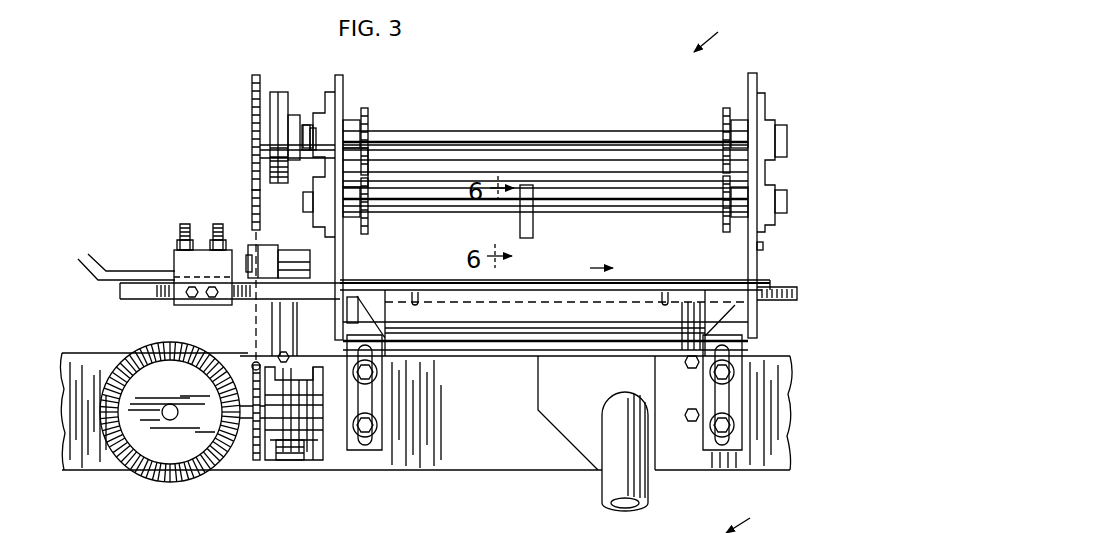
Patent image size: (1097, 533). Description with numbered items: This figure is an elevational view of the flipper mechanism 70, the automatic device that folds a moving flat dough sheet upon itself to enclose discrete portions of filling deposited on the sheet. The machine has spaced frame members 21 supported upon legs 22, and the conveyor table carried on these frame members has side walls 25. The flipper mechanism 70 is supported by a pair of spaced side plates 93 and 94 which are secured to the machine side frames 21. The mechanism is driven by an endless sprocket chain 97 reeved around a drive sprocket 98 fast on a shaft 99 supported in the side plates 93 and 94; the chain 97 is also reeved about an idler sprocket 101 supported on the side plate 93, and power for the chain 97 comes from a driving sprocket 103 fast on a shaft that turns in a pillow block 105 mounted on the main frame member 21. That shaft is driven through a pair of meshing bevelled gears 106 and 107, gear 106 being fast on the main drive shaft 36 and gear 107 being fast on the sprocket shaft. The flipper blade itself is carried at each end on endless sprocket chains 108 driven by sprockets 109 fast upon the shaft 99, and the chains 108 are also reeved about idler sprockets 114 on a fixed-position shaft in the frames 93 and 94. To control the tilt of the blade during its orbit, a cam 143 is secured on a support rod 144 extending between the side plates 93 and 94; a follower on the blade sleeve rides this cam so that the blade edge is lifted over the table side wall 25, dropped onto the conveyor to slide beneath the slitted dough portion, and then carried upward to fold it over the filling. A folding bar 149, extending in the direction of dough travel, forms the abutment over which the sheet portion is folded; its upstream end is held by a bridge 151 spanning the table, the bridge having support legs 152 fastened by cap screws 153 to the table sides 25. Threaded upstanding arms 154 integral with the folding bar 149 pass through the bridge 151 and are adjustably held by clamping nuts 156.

The flipper mechanism 70 is at (733, 273).
The frame members 21 is at (476, 472).
The legs 22 is at (624, 500).
The side walls 25 is at (124, 298).
The main drive shaft 36 is at (180, 424).
The side plate 93 is at (344, 236).
The side plate 94 is at (758, 257).
The endless sprocket chain 97 is at (255, 217).
The drive sprocket 98 is at (253, 130).
The shaft 99 is at (440, 133).
The idler sprocket 101 is at (258, 245).
The driving sprocket 103 is at (286, 466).
The pillow block 105 is at (312, 456).
The bevelled gear 106 is at (168, 479).
The bevelled gear 107 is at (258, 464).
The endless sprocket chains 108 is at (365, 168).
The sprockets 109 is at (370, 119).
The idler sprockets 114 is at (367, 212).
The cam 143 is at (528, 232).
The support rod 144 is at (596, 207).
The folding bar 149 is at (401, 281).
The bridge 151 is at (174, 262).
The support legs 152 is at (171, 306).
The cap screws 153 is at (213, 299).
The threaded upstanding arms 154 is at (180, 233).
The clamping nuts 156 is at (177, 244).